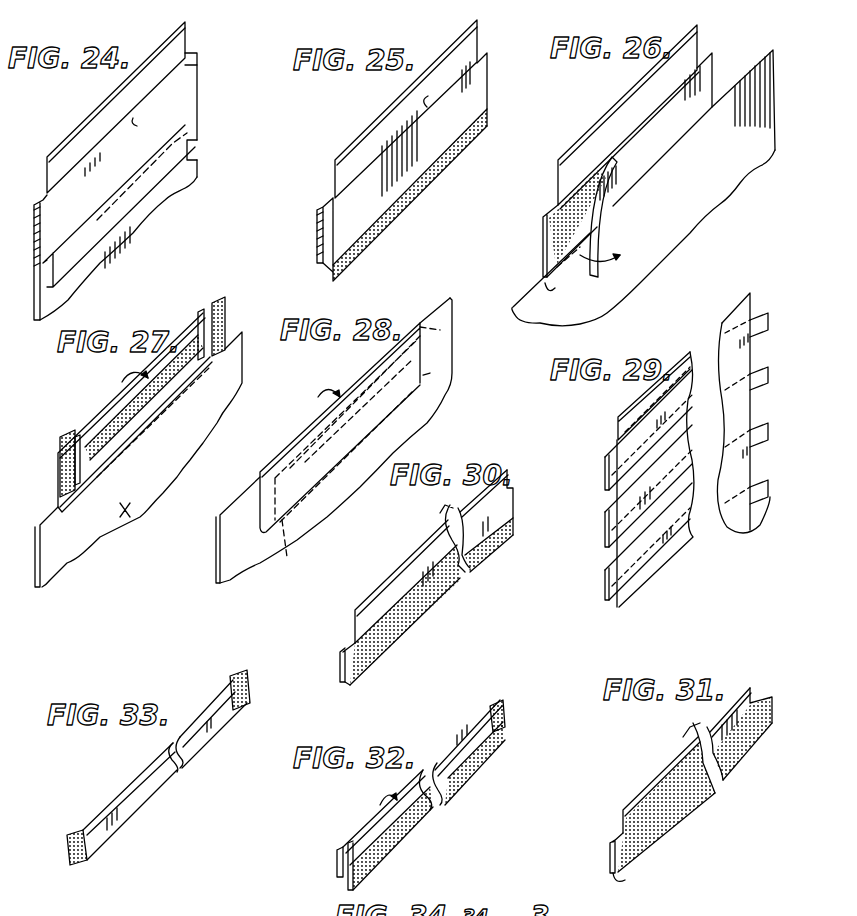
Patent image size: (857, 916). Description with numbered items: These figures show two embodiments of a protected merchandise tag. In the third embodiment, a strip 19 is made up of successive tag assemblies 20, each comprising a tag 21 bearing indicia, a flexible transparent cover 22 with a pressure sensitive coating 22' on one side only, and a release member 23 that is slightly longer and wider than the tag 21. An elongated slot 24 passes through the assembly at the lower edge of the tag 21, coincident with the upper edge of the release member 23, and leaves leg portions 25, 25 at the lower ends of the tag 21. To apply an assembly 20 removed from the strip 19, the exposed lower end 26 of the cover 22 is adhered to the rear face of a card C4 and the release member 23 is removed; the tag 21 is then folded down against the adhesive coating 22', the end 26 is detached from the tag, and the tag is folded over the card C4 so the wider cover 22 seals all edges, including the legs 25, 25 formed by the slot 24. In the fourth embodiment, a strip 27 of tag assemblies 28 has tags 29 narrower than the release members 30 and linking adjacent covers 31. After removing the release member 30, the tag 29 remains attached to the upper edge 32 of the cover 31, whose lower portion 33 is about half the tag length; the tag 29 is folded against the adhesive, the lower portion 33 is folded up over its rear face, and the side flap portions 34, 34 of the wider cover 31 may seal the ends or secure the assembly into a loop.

In FIG. 24, the strip 19 is at (172, 30).
In FIG. 25, the tag assembly 20 is at (447, 38).
In FIG. 26, the tag assembly 20 is at (540, 200).
In FIG. 27, the tag assembly 20 is at (50, 462).
In FIG. 28, the tag assembly 20 is at (268, 449).
In FIG. 24, the tag 21 is at (187, 40).
In FIG. 25, the tag 21 is at (383, 123).
In FIG. 26, the tag 21 is at (637, 90).
In FIG. 28, the tag 21 is at (347, 429).
In FIG. 24, the flexible transparent cover 22 is at (102, 206).
In FIG. 25, the flexible transparent cover 22 is at (311, 231).
In FIG. 26, the flexible transparent cover 22 is at (550, 259).
In FIG. 27, the flexible transparent cover 22 is at (114, 412).
In FIG. 28, the flexible transparent cover 22 is at (315, 428).
In FIG. 25, the pressure sensitive coating 22' is at (410, 195).
In FIG. 26, the pressure sensitive coating 22' is at (553, 218).
In FIG. 27, the pressure sensitive coating 22' is at (182, 397).
In FIG. 28, the pressure sensitive coating 22' is at (454, 324).
In FIG. 24, the release member 23 is at (187, 98).
In FIG. 25, the release member 23 is at (480, 88).
In FIG. 26, the release member 23 is at (712, 77).
In FIG. 24, the elongated slot 24 is at (143, 123).
In FIG. 25, the elongated slot 24 is at (427, 107).
In FIG. 24, the leg portion 25 is at (197, 63).
In FIG. 25, the leg portion 25 is at (333, 207).
In FIG. 26, the leg portion 25 is at (600, 217).
In FIG. 27, the leg portion 25 is at (79, 432).
In FIG. 28, the leg portion 25 is at (463, 368).
In FIG. 25, the exposed end of cover 26 is at (437, 170).
In FIG. 29, the strip 27 is at (598, 432).
In FIG. 29, the tag assembly 28 is at (780, 309).
In FIG. 30, the tag assembly 28 is at (388, 565).
In FIG. 33, the tag assembly 28 is at (150, 802).
In FIG. 32, the tag assembly 28 is at (409, 842).
In FIG. 31, the tag assembly 28 is at (635, 794).
In FIG. 29, the tag 29 is at (617, 443).
In FIG. 29, the release member 30 is at (610, 533).
In FIG. 30, the release member 30 is at (420, 595).
In FIG. 29, the cover 31 is at (612, 563).
In FIG. 30, the cover 31 is at (347, 683).
In FIG. 31, the cover 31 is at (667, 830).
In FIG. 30, the upper edge of cover 32 is at (353, 627).
In FIG. 33, the upper edge of cover 32 is at (130, 780).
In FIG. 32, the upper edge of cover 32 is at (367, 827).
In FIG. 31, the upper edge of cover 32 is at (623, 828).
In FIG. 30, the lower portion of cover 33 is at (383, 655).
In FIG. 33, the lower portion of cover 33 is at (193, 750).
In FIG. 32, the lower portion of cover 33 is at (352, 887).
In FIG. 31, the lower portion of cover 33 is at (613, 875).
In FIG. 30, the flap portion 34 is at (338, 667).
In FIG. 33, the flap portion 34 is at (73, 840).
In FIG. 32, the flap portion 34 is at (337, 870).
In FIG. 31, the flap portion 34 is at (608, 860).
In FIG. 26, the card C4 is at (688, 227).
In FIG. 27, the card C4 is at (138, 459).
In FIG. 28, the card C4 is at (428, 403).